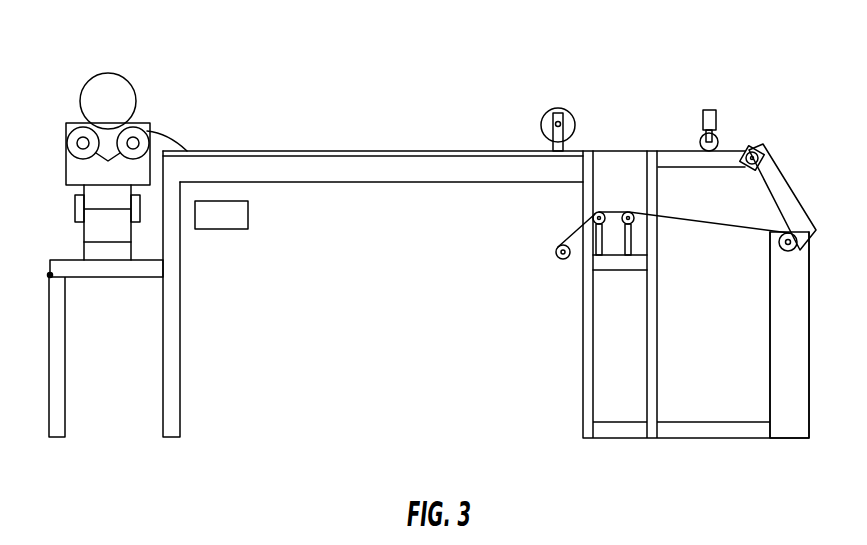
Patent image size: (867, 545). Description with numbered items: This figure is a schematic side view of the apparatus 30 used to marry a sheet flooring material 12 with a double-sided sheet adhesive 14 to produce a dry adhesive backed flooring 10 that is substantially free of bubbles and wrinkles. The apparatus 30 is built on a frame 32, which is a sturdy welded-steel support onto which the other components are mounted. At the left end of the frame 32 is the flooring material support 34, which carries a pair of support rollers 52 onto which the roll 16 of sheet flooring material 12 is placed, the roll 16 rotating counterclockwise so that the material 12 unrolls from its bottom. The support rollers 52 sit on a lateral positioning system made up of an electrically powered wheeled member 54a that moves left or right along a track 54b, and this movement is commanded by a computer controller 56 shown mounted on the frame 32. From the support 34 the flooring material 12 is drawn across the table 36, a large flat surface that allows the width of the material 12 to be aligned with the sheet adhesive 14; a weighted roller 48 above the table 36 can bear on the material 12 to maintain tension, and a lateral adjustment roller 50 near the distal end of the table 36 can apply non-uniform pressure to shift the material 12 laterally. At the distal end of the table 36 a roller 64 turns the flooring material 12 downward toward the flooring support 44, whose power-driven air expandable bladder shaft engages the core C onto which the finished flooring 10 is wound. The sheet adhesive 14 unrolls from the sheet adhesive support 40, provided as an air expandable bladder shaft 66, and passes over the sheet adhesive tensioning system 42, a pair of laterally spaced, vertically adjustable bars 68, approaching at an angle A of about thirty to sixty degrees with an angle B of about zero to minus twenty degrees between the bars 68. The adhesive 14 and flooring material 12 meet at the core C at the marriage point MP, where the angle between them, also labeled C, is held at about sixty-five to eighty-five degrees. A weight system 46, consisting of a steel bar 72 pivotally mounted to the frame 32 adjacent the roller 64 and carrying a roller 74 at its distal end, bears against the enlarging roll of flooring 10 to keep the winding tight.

The dry adhesive backed flooring 10 is at (786, 257).
The sheet flooring material 12 is at (108, 74).
The double-sided sheet adhesive 14 is at (557, 252).
The roll 16 is at (118, 113).
The apparatus 30 is at (386, 116).
The frame 32 is at (180, 358).
The flooring material support 34 is at (56, 130).
The table 36 is at (373, 178).
The sheet adhesive support 40 is at (552, 236).
The sheet adhesive tensioning system 42 is at (611, 206).
The flooring support 44 is at (790, 258).
The weight system 46 is at (802, 189).
The weighted roller 48 is at (566, 114).
The lateral adjustment roller 50 is at (716, 116).
The support rollers 52 is at (108, 156).
The wheeled member 54a is at (75, 200).
The track 54b is at (84, 240).
The computer controller 56 is at (231, 226).
The roller 64 is at (747, 168).
The air expandable bladder shaft 66 is at (563, 259).
The bars 68 is at (596, 212).
The steel bar 72 is at (790, 207).
The roller 74 is at (812, 238).
The angle A is at (569, 234).
The angle B is at (618, 222).
The core C is at (797, 250).
The marriage point MP is at (780, 255).